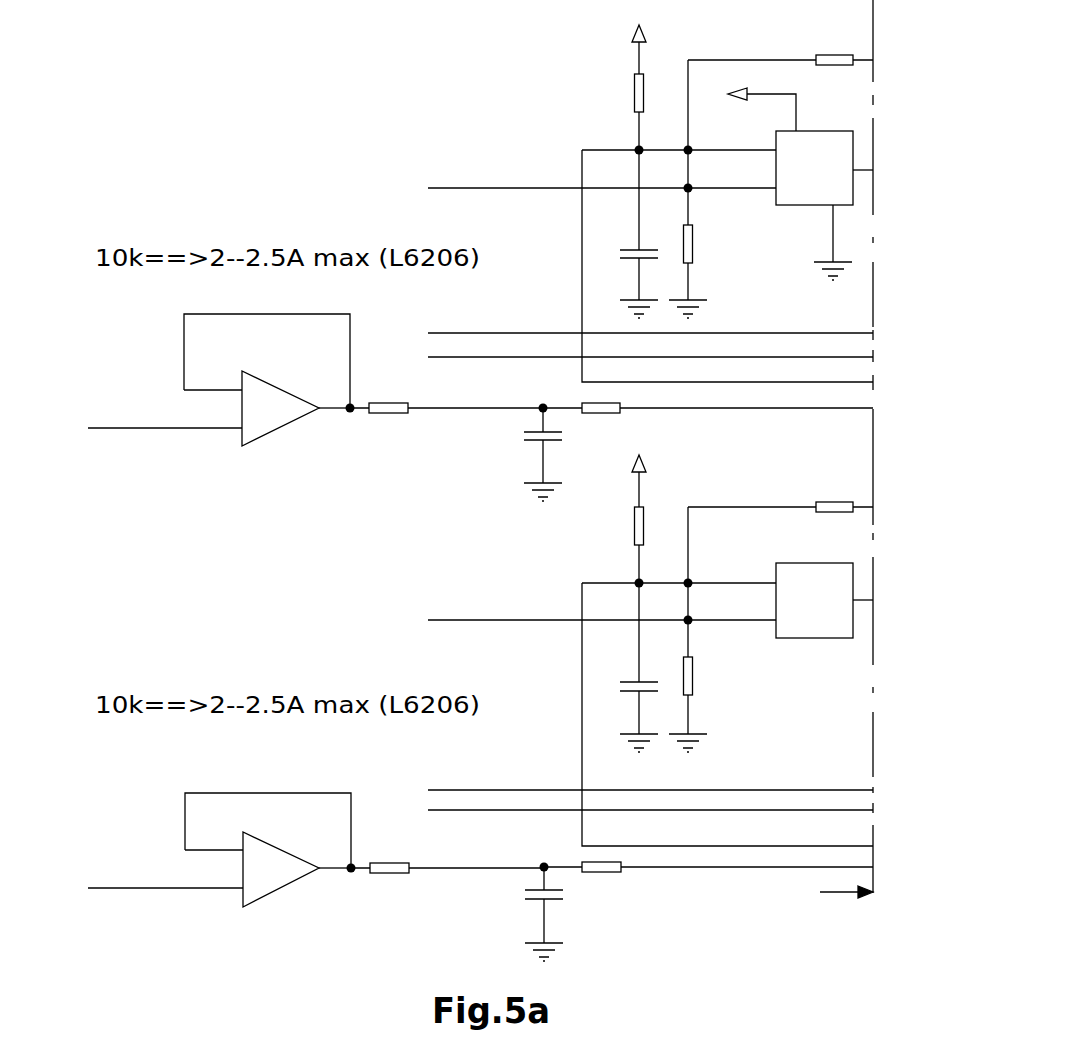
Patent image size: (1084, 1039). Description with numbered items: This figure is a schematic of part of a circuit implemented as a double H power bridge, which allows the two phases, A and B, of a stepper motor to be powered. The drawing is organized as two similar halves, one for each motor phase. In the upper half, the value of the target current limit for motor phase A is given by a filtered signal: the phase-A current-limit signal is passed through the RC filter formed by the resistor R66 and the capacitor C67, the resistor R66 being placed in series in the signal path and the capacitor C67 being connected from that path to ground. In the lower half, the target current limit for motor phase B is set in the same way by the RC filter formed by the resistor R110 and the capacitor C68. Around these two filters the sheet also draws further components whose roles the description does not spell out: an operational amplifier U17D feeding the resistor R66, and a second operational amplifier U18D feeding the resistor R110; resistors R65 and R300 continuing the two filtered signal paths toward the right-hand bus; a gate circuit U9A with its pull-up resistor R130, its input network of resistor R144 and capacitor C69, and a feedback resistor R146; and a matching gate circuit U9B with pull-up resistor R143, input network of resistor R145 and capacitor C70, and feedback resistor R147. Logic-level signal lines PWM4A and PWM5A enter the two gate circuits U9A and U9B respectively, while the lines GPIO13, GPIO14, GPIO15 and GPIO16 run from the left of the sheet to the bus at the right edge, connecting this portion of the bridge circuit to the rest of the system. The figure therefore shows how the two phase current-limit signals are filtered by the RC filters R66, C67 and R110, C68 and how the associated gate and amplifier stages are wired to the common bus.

The pull-up resistor 3k3 R130 is at (617, 75).
The capacitor 6n8 C69 is at (621, 234).
The resistor 3k3 R144 is at (714, 253).
The resistor 1M R146 is at (780, 56).
The AND gate 74AHC08 U9A is at (794, 197).
The op-amp MAX4492ASD U17D is at (224, 424).
The RC filter resistor R66 is at (446, 407).
The RC filter capacitor C67 is at (517, 453).
The resistor 10k R65 is at (708, 434).
The pull-up resistor 3k3 R143 is at (634, 511).
The capacitor 6n8 C70 is at (621, 667).
The resistor 3k3 R145 is at (714, 686).
The resistor 1M R147 is at (780, 503).
The AND gate 74AHC08 U9B is at (800, 652).
The op-amp MAX4492ASD U18D is at (224, 894).
The RC filter resistor R110 is at (447, 867).
The RC filter capacitor C68 is at (516, 912).
The resistor 10k R300 is at (708, 896).
The PWM4A net PWM4A is at (602, 175).
The PWM5A net PWM5A is at (602, 607).
The GPIO13 net GPIO13 is at (650, 321).
The GPIO14 net GPIO14 is at (650, 347).
The GPIO15 net GPIO15 is at (650, 778).
The GPIO16 net GPIO16 is at (650, 825).